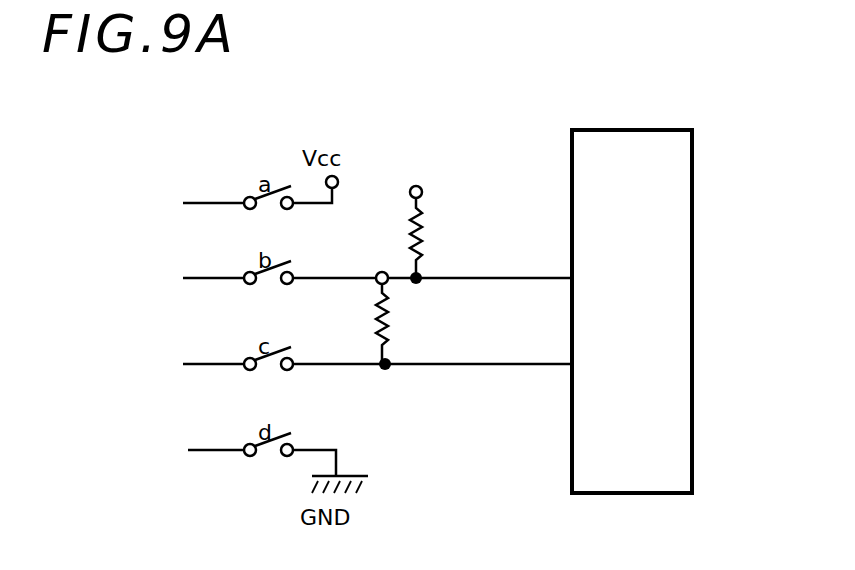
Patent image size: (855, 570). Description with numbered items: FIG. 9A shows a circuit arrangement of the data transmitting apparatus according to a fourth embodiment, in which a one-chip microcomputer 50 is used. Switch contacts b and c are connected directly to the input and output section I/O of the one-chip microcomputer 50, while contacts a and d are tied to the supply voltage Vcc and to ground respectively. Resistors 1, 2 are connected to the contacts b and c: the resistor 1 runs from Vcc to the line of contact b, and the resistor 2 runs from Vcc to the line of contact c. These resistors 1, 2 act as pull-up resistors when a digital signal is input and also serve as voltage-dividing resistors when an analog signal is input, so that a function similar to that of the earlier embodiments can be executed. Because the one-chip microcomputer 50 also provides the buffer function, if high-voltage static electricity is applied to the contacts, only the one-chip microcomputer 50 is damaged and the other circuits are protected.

The resistor 1 is at (424, 247).
The resistor 2 is at (392, 328).
The one-chip microcomputer 50 is at (692, 278).